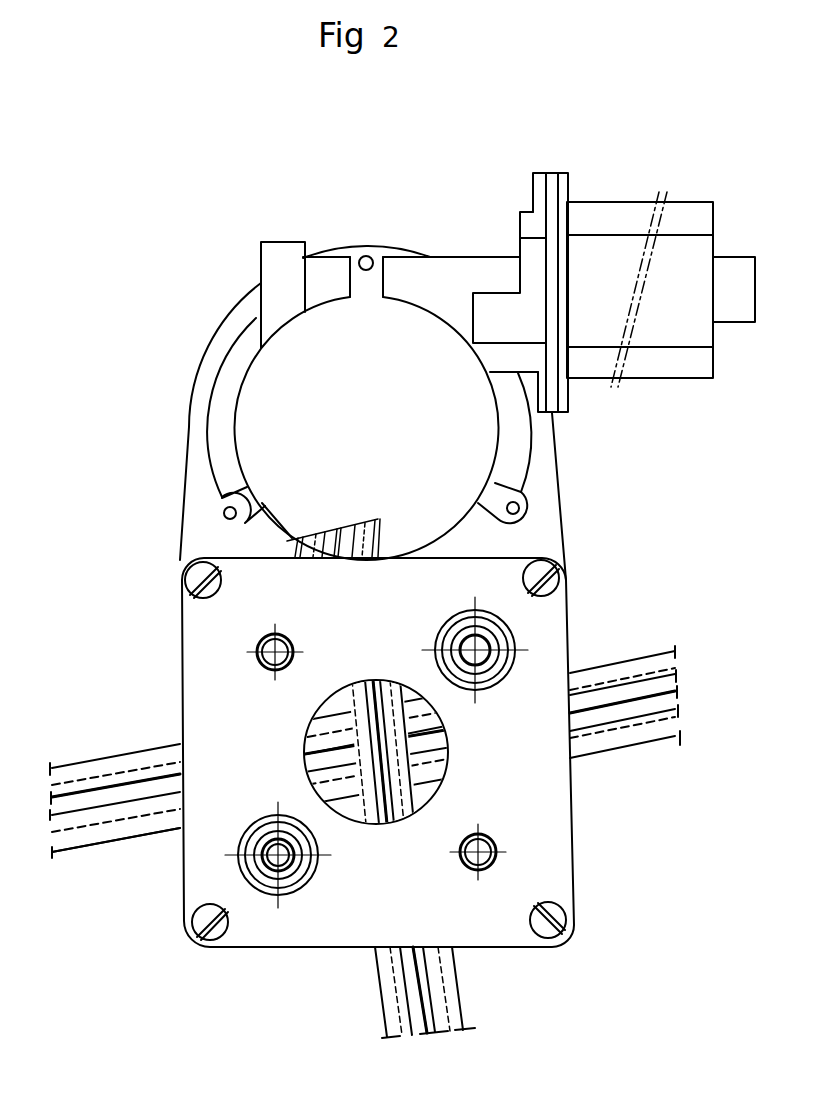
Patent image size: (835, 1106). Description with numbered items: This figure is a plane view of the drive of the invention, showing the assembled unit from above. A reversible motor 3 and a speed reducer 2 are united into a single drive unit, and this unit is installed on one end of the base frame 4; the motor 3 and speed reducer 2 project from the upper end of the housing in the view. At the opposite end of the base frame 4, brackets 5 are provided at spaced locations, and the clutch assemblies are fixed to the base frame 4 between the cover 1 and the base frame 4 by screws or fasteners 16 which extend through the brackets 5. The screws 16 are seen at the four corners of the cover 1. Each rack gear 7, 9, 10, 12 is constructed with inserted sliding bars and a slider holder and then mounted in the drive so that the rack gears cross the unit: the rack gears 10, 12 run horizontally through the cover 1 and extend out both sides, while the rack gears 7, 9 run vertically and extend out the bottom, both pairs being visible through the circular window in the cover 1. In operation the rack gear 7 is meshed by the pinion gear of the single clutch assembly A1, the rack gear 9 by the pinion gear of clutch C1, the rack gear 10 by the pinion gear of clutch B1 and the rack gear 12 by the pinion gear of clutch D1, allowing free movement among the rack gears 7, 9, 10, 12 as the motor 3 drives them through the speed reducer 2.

The cover 1 is at (557, 850).
The speed reducer 2 is at (258, 405).
The reversible motor 3 is at (608, 220).
The base frame 4 is at (546, 495).
The bracket 5 is at (366, 682).
The rack gear 7 is at (390, 997).
The rack gear 9 is at (460, 998).
The rack gear 10 is at (130, 766).
The rack gear 12 is at (115, 843).
The screws 16 is at (186, 588).